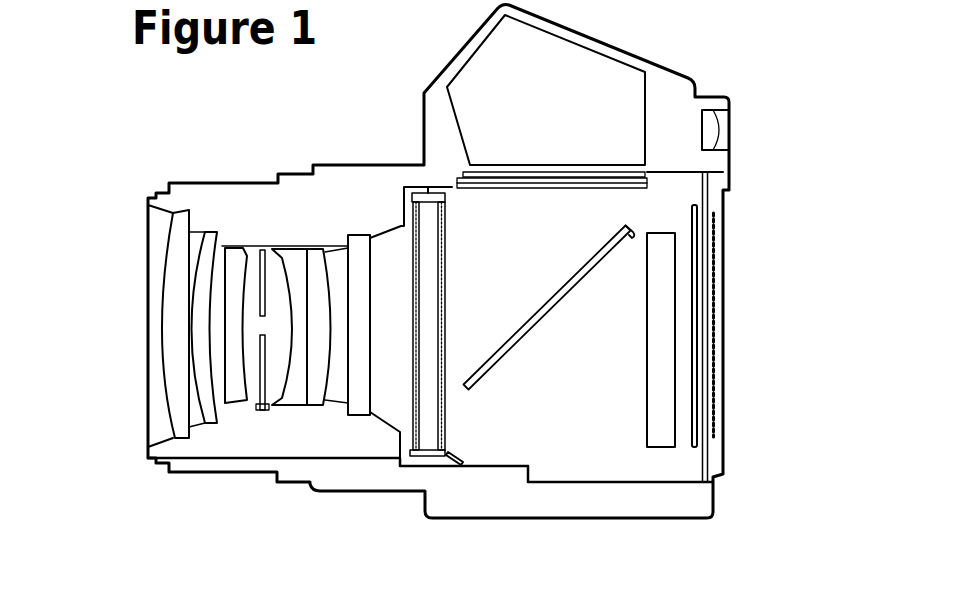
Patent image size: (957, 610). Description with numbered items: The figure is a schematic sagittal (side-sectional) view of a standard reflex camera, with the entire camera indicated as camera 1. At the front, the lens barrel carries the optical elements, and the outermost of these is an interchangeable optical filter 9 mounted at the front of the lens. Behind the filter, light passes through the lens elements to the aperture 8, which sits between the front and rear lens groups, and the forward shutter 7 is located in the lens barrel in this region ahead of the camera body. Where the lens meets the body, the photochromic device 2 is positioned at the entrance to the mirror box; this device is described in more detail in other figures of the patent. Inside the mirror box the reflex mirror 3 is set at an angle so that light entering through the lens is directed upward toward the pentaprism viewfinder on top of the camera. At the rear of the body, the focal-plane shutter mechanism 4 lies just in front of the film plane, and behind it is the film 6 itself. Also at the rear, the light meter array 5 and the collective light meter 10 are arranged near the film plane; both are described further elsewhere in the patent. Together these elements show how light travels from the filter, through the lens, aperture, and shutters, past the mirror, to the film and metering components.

The camera 1 is at (696, 71).
The photochromic device 2 is at (445, 260).
The reflex mirror 3 is at (552, 312).
The focal-plane shutter mechanism 4 is at (693, 365).
The light meter array 5 is at (675, 420).
The film 6 is at (710, 433).
The forward shutter 7 is at (348, 242).
The aperture 8 is at (263, 295).
The interchangeable optical filter 9 is at (147, 378).
The collective light meter 10 is at (428, 458).